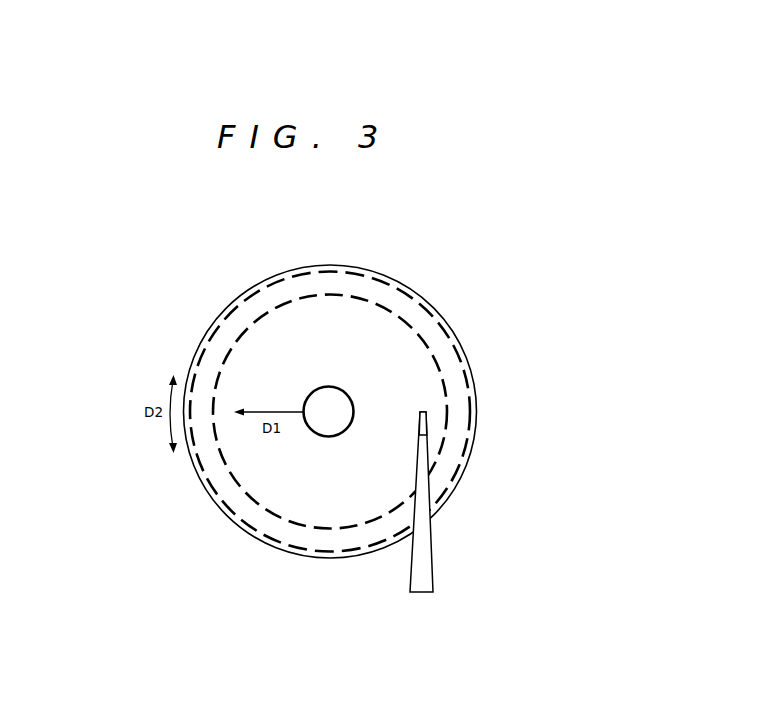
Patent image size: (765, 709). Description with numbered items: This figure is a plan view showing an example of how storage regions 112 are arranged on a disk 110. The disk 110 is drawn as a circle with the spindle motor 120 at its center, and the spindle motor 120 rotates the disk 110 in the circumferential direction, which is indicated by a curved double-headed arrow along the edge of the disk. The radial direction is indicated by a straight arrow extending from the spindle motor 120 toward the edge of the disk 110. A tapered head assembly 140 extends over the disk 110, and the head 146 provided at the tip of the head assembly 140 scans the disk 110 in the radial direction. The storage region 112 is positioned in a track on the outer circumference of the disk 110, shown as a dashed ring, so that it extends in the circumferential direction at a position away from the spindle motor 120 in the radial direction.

The disk 110 is at (478, 410).
The storage region 112 is at (456, 388).
The spindle motor 120 is at (328, 387).
The head assembly 140 is at (420, 553).
The head 146 is at (427, 426).